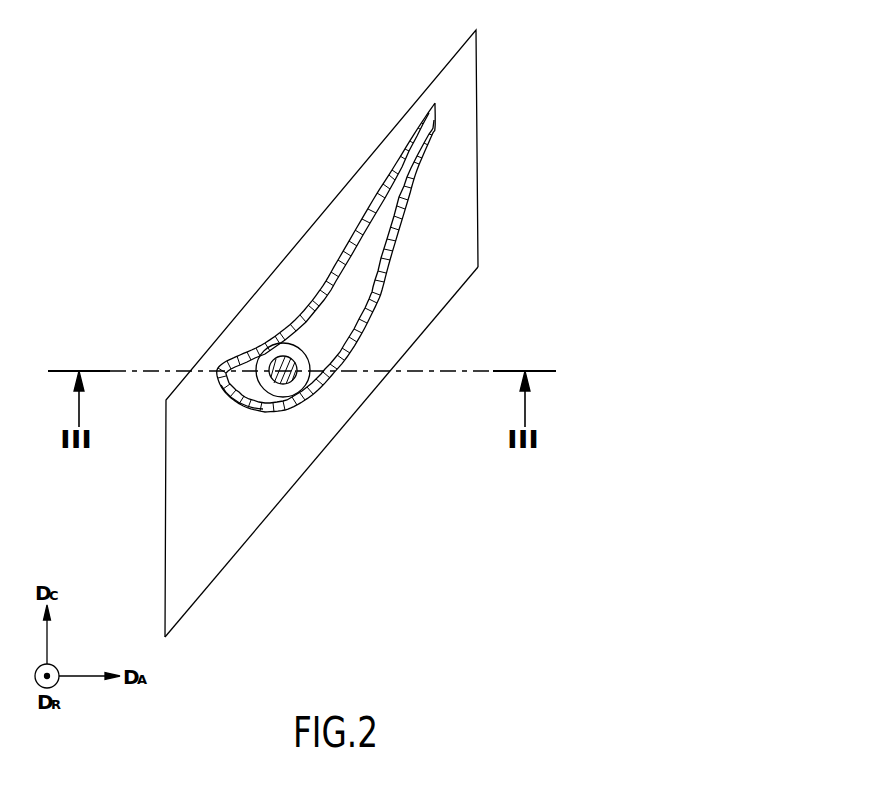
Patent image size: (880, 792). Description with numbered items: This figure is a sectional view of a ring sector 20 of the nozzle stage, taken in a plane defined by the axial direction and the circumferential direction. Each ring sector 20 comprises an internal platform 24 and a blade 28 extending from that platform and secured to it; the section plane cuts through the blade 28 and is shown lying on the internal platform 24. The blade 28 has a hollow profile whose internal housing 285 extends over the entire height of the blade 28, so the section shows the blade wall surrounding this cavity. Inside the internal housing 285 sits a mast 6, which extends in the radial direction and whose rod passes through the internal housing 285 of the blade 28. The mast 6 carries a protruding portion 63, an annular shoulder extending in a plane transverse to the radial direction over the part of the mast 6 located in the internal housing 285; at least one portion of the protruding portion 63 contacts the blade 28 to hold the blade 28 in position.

The ring sector 20 is at (435, 288).
The internal platform 24 is at (225, 540).
The blade 28 is at (370, 279).
The internal housing 285 is at (319, 345).
The protruding portion 63 is at (272, 355).
The mast 6 is at (276, 386).